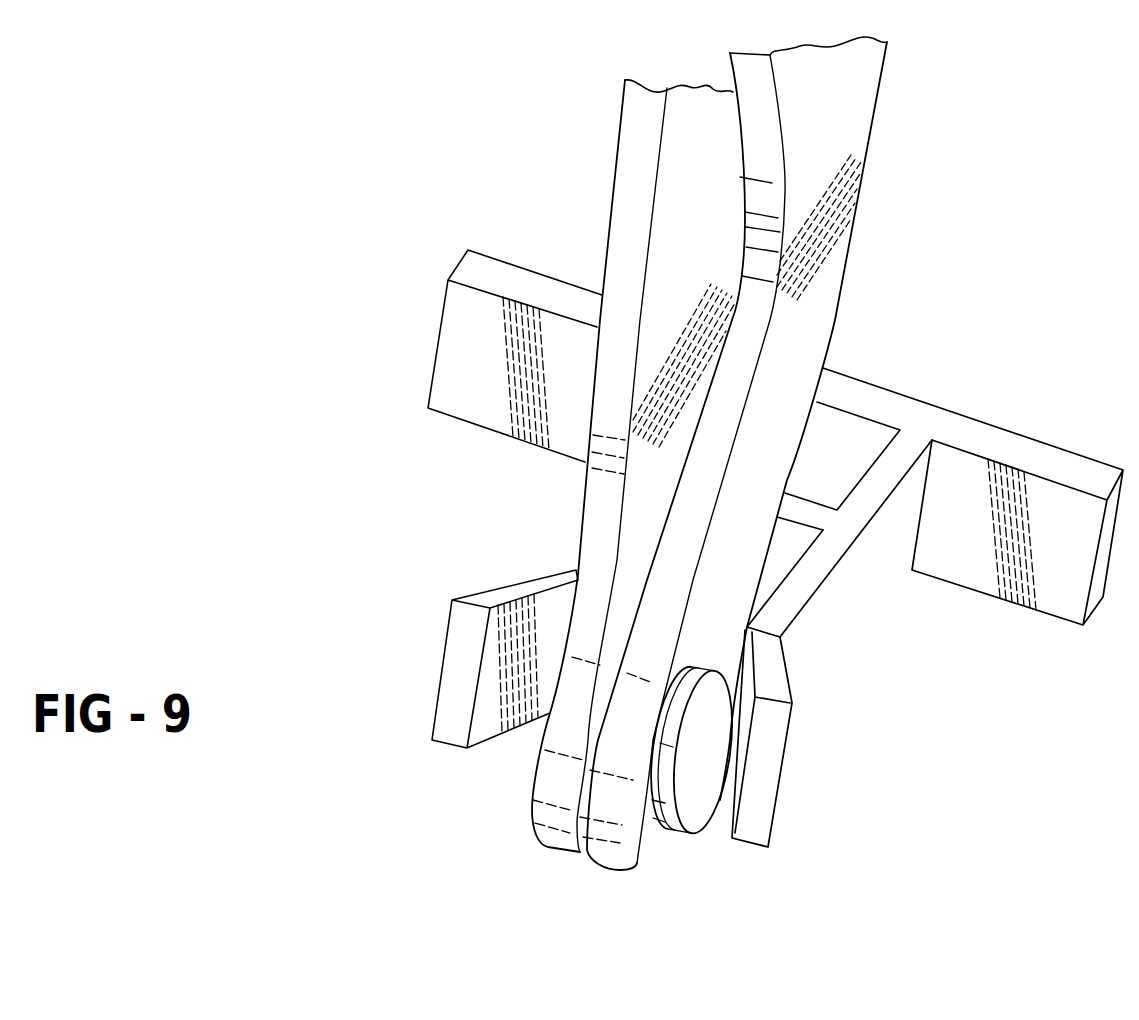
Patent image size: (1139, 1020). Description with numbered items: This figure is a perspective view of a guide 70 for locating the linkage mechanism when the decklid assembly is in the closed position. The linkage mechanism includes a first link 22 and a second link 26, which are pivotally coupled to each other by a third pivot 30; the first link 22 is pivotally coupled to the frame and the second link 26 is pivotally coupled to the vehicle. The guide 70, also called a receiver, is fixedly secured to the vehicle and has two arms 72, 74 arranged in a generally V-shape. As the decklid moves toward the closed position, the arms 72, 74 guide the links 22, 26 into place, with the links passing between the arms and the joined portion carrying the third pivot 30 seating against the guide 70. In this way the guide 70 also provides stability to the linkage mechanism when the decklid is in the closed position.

The first link 22 is at (630, 187).
The second link 26 is at (833, 273).
The third pivot 30 is at (688, 800).
The guide 70 is at (983, 438).
The arm 72 is at (520, 573).
The arm 74 is at (823, 648).